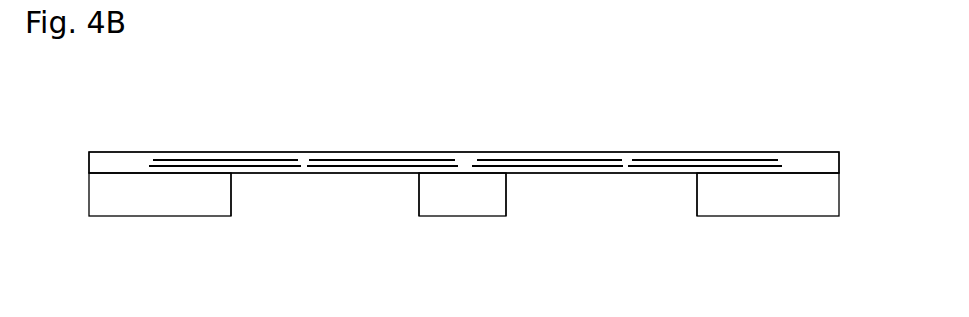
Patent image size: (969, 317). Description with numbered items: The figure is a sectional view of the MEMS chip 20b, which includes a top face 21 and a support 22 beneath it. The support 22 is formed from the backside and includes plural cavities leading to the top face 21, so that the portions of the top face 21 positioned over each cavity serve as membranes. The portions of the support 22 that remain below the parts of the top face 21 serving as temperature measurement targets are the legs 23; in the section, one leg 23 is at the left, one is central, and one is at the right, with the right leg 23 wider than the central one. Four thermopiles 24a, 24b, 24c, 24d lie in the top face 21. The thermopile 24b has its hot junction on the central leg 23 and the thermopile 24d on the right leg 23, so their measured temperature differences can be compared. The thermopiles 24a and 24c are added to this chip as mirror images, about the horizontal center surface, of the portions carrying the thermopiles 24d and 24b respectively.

The MEMS chip 20b is at (815, 127).
The top face 21 is at (93, 167).
The support 22 is at (226, 199).
The leg 23 is at (93, 200).
The thermopile 24a is at (263, 160).
The thermopile 24b is at (380, 160).
The thermopile 24c is at (554, 162).
The thermopile 24d is at (712, 160).